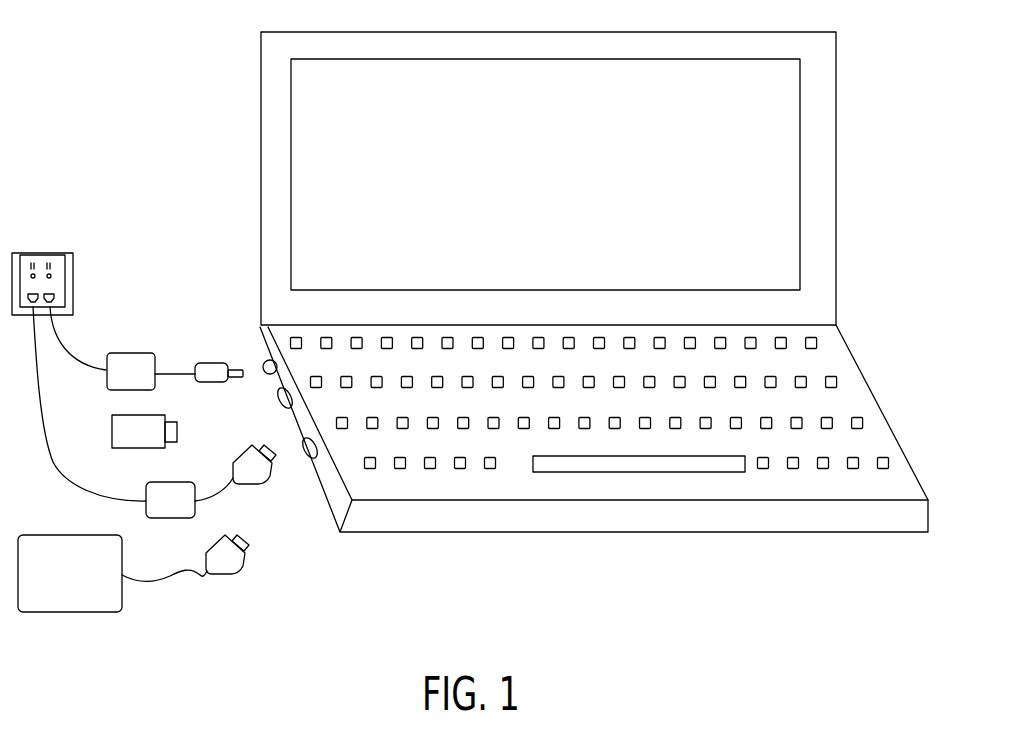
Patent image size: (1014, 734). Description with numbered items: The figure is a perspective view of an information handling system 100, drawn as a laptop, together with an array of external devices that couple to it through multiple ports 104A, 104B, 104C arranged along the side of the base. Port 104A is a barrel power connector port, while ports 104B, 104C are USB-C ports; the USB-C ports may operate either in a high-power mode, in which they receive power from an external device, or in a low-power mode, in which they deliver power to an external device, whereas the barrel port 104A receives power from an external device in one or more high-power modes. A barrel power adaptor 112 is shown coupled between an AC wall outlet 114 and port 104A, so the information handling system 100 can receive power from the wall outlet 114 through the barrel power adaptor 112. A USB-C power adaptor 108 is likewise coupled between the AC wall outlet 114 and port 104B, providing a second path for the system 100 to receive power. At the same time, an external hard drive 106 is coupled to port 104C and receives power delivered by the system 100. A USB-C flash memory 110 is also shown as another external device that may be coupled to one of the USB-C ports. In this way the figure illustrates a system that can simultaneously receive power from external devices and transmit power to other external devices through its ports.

The information handling system 100 is at (837, 148).
The barrel power connector port 104A is at (262, 362).
The USB-C port 104B is at (279, 402).
The USB-C port 104C is at (308, 460).
The external hard drive 106 is at (122, 596).
The USB-C power adaptor 108 is at (268, 482).
The USB-C flash memory 110 is at (112, 428).
The barrel power adaptor 112 is at (135, 353).
The AC wall outlet 114 is at (37, 253).